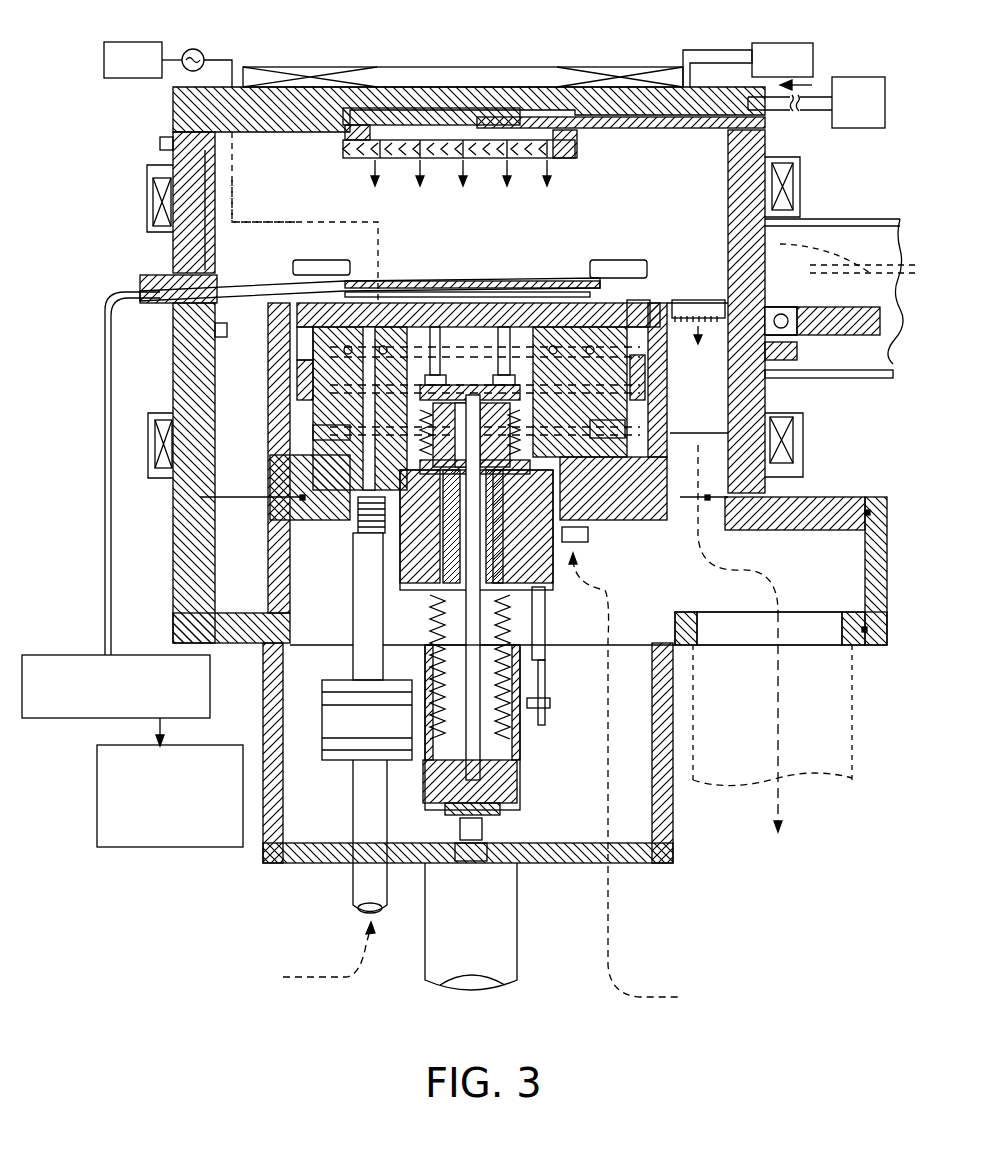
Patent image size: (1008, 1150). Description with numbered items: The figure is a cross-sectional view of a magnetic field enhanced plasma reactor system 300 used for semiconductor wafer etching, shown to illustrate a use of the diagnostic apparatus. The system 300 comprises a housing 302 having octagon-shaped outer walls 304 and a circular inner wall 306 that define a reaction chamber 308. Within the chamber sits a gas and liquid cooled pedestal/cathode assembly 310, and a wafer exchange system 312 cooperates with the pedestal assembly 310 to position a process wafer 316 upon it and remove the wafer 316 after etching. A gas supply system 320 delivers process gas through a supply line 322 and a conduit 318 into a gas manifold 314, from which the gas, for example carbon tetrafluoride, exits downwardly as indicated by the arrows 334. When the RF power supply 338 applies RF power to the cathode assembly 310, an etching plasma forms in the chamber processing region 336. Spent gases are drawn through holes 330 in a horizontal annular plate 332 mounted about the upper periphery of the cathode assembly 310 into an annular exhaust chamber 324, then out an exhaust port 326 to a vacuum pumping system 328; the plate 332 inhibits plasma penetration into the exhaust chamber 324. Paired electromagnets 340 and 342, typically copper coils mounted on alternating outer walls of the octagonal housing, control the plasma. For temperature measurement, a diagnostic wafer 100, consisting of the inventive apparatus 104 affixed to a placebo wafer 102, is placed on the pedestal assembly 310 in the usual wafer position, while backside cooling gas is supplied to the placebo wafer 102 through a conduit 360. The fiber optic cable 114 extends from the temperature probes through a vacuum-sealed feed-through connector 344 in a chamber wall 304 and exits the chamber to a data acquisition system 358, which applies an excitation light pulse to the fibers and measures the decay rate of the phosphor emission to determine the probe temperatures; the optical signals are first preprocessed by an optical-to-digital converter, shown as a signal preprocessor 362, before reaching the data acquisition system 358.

The magnetic field enhanced plasma reactor system 300 is at (187, 23).
The housing 302 is at (156, 143).
The octagon-shaped outer walls 304 is at (216, 178).
The circular inner wall 306 is at (222, 205).
The reaction chamber 308 is at (313, 138).
The pedestal/cathode assembly 310 is at (615, 278).
The wafer exchange system 312 is at (913, 300).
The gas manifold 314 is at (570, 152).
The process wafer 316 is at (870, 295).
The conduit 318 is at (637, 120).
The gas supply system 320 is at (877, 118).
The supply line 322 is at (800, 112).
The annular exhaust chamber 324 is at (258, 437).
The exhaust port 326 is at (840, 628).
The vacuum pumping system 328 is at (637, 705).
The holes 330 is at (712, 300).
The horizontal annular plate 332 is at (686, 298).
The arrows 334 is at (378, 167).
The chamber processing region 336 is at (504, 218).
The RF power supply 338 is at (152, 74).
The electromagnet 340 is at (153, 204).
The electromagnet 342 is at (795, 181).
The feed-through connector 344 is at (197, 262).
The diagnostic wafer 100 is at (536, 266).
The placebo wafer 102 is at (497, 280).
The inventive apparatus 104 is at (442, 250).
The fiber optic cable 114 is at (350, 278).
The data acquisition system 358 is at (228, 848).
The conduit 360 is at (358, 885).
The signal preprocessor 362 is at (27, 720).